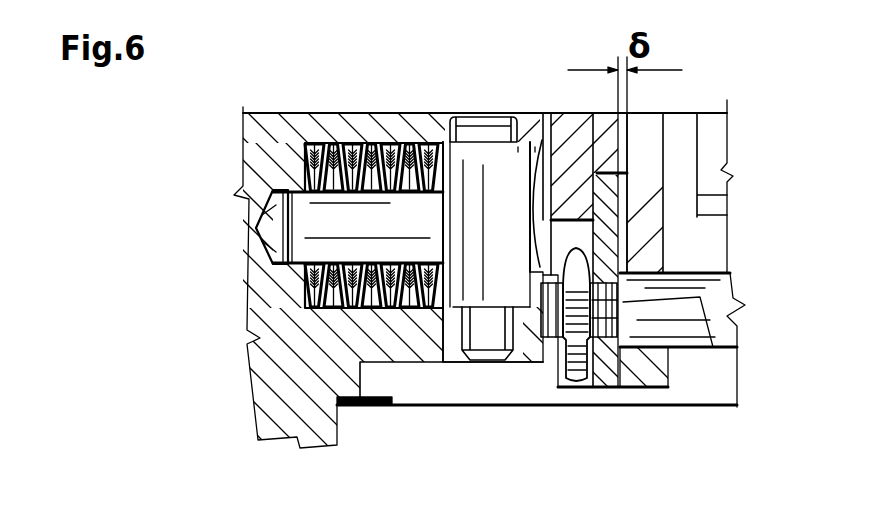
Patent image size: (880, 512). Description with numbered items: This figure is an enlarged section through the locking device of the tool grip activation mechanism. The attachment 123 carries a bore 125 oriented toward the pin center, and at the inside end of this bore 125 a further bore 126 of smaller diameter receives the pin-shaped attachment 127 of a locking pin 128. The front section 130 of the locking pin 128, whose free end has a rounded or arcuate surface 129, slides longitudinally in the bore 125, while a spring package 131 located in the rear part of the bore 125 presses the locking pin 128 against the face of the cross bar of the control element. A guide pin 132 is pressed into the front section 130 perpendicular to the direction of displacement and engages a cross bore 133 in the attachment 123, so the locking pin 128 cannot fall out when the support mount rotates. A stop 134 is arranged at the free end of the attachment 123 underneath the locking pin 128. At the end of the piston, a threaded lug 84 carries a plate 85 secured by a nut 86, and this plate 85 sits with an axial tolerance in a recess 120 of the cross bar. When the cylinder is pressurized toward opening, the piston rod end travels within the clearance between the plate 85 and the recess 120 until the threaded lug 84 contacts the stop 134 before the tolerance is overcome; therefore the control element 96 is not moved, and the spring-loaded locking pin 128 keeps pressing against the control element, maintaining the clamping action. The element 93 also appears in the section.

The threaded lug 84 is at (699, 296).
The plate 85 is at (607, 343).
The nut 86 is at (580, 350).
The plate 93 is at (707, 337).
The control element 96 is at (670, 390).
The recess 120 is at (597, 166).
The attachment 123 is at (287, 383).
The bore 125 is at (316, 151).
The bore 126 is at (280, 208).
The pin-shaped attachment 127 is at (312, 243).
The locking pin 128 is at (422, 128).
The arcuate surface 129 is at (544, 113).
The front section 130 is at (469, 218).
The spring package 131 is at (355, 130).
The guide pin 132 is at (487, 345).
The cross bore 133 is at (452, 362).
The stop 134 is at (537, 338).